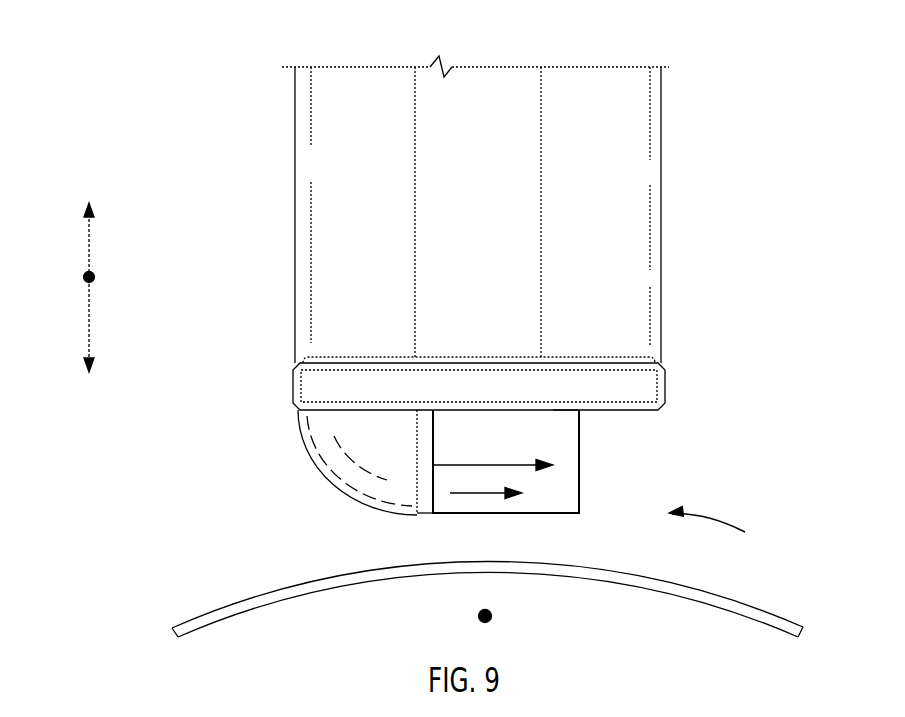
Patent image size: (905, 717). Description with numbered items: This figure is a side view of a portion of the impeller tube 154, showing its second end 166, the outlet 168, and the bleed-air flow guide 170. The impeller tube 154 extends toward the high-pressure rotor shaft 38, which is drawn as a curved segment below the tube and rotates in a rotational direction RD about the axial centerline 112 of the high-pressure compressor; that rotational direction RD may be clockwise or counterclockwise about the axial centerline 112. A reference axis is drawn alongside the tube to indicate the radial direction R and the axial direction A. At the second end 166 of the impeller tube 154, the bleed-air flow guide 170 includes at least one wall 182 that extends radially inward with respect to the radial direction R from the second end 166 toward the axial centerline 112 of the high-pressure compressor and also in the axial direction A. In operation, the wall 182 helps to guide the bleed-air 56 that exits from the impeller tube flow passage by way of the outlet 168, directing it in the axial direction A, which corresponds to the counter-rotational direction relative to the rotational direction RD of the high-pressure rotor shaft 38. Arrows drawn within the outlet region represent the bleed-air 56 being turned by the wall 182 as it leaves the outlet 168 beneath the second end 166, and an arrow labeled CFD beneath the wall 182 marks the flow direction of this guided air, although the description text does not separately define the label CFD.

The impeller tube 154 is at (666, 153).
The second end 166 is at (647, 414).
The bleed-air flow guide 170 is at (329, 494).
The wall 182 is at (525, 503).
The bleed-air 56 is at (457, 463).
The outlet 168 is at (554, 415).
The high-pressure rotor shaft 38 is at (740, 601).
The axial centerline 112 is at (492, 617).
The radial direction R is at (90, 247).
The axial direction A is at (95, 278).
The rotational direction RD is at (716, 516).
The cooling fluid direction CFD is at (476, 497).